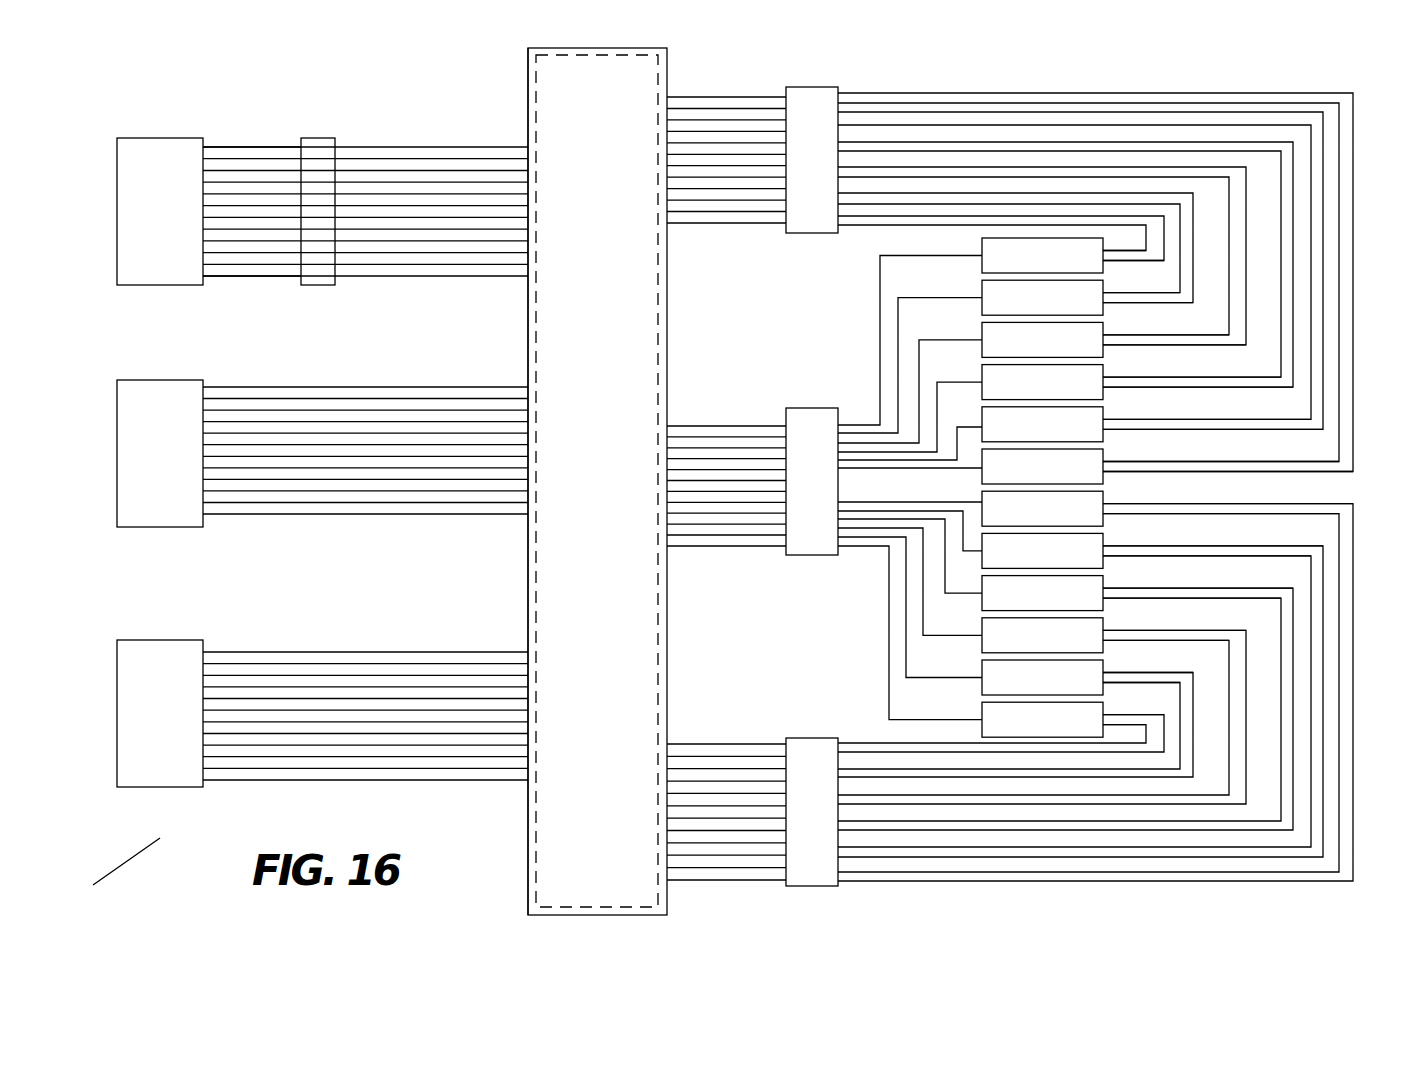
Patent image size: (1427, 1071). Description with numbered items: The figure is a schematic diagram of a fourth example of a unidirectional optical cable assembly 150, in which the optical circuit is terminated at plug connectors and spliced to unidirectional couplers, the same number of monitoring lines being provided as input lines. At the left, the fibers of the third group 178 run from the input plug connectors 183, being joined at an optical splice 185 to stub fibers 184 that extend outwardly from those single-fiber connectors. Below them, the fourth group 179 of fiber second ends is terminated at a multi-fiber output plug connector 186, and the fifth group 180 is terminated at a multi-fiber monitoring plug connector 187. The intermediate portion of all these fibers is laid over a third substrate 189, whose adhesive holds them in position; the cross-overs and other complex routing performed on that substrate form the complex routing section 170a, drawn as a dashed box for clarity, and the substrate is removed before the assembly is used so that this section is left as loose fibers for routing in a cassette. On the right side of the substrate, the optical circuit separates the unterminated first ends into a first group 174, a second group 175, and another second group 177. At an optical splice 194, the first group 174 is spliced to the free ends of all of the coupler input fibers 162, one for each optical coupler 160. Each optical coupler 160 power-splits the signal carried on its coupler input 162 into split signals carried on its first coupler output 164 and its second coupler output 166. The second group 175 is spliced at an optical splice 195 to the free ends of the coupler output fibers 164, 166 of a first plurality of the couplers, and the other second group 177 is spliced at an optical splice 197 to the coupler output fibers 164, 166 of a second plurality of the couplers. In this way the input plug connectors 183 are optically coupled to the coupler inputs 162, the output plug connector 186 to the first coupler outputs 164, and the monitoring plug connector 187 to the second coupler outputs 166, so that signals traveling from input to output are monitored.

The optical cable assembly 150 is at (160, 838).
The optical coupler 160 is at (1061, 731).
The coupler input 162 is at (932, 252).
The first coupler output 164 is at (1115, 378).
The second coupler output 166 is at (1345, 520).
The complex routing section 170a is at (528, 107).
The first group 174 is at (742, 410).
The second group 175 is at (744, 78).
The another second group 177 is at (756, 725).
The third group 178 is at (450, 126).
The fourth group 179 is at (408, 366).
The fifth group 180 is at (412, 628).
The input plug connector 183 is at (179, 223).
The stub fibers 184 is at (273, 146).
The optical splice 185 is at (322, 138).
The output plug connector 186 is at (179, 461).
The monitoring plug connector 187 is at (179, 724).
The third substrate 189 is at (616, 491).
The optical splice 194 is at (812, 420).
The optical splice 195 is at (812, 98).
The optical splice 197 is at (808, 748).